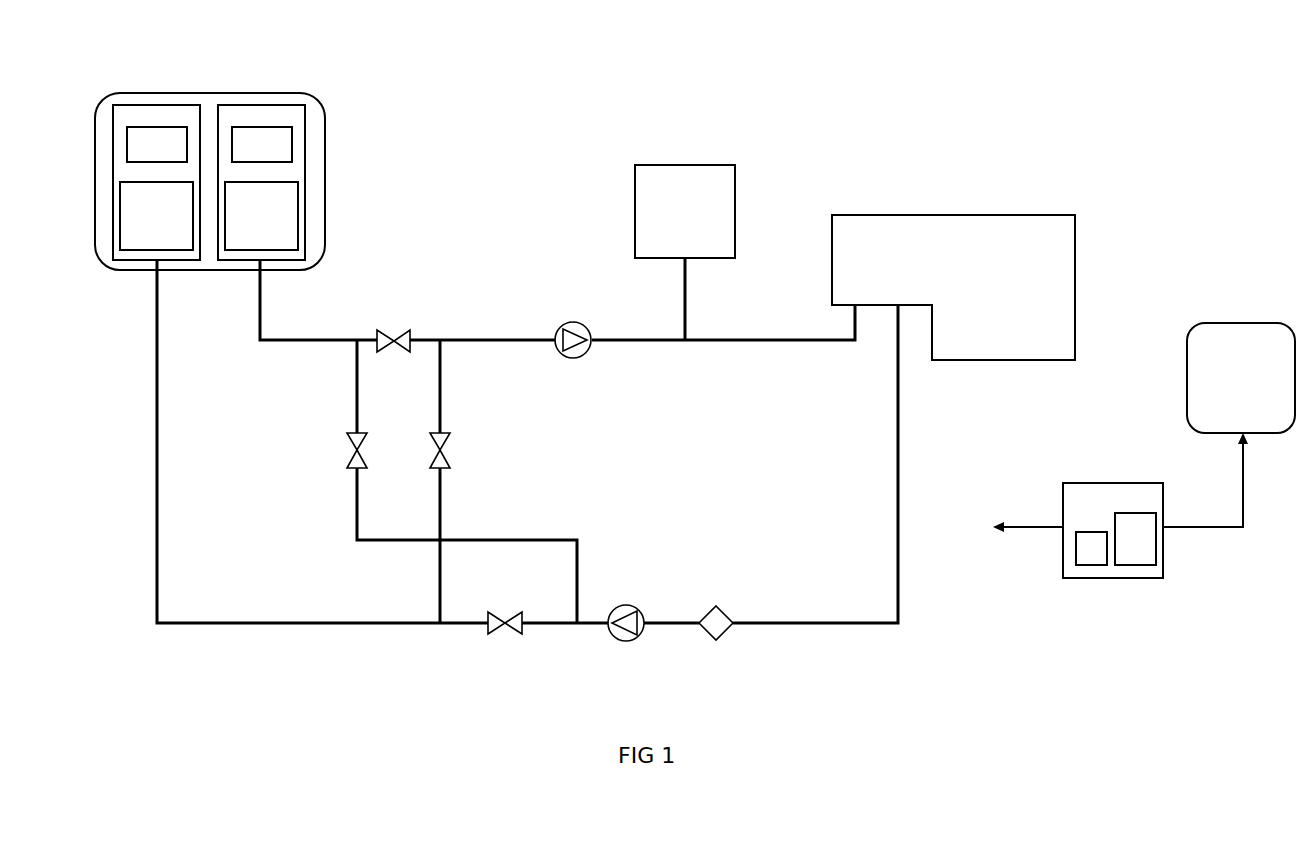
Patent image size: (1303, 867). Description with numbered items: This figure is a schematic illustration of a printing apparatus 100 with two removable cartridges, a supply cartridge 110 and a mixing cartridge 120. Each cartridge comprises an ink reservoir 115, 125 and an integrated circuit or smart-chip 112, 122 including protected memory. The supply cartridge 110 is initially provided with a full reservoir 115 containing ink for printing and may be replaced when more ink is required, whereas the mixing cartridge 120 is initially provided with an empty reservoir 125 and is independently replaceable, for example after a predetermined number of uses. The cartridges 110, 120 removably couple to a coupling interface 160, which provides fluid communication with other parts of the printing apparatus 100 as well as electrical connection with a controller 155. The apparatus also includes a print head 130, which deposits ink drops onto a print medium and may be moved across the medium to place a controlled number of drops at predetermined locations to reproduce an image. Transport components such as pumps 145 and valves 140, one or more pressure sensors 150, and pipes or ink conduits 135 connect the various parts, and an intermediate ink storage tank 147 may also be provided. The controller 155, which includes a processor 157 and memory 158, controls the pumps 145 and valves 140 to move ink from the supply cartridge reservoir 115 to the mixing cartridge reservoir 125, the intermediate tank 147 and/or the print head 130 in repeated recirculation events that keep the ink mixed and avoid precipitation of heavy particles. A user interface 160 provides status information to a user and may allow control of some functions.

The printing apparatus 100 is at (776, 78).
The supply cartridge 110 is at (112, 105).
The smart-chip 112 is at (152, 150).
The ink reservoir 115 is at (137, 218).
The mixing cartridge 120 is at (307, 110).
The smart-chip 122 is at (272, 143).
The ink reservoir 125 is at (275, 227).
The print head 130 is at (1042, 230).
The ink conduits 135 is at (897, 555).
The valves 140 is at (490, 617).
The pumps 145 is at (617, 603).
The intermediate ink storage tank 147 is at (657, 207).
The pressure sensor 150 is at (723, 612).
The controller 155 is at (1112, 508).
The processor 157 is at (1090, 565).
The memory 158 is at (1138, 545).
The user interface 160 is at (120, 270).